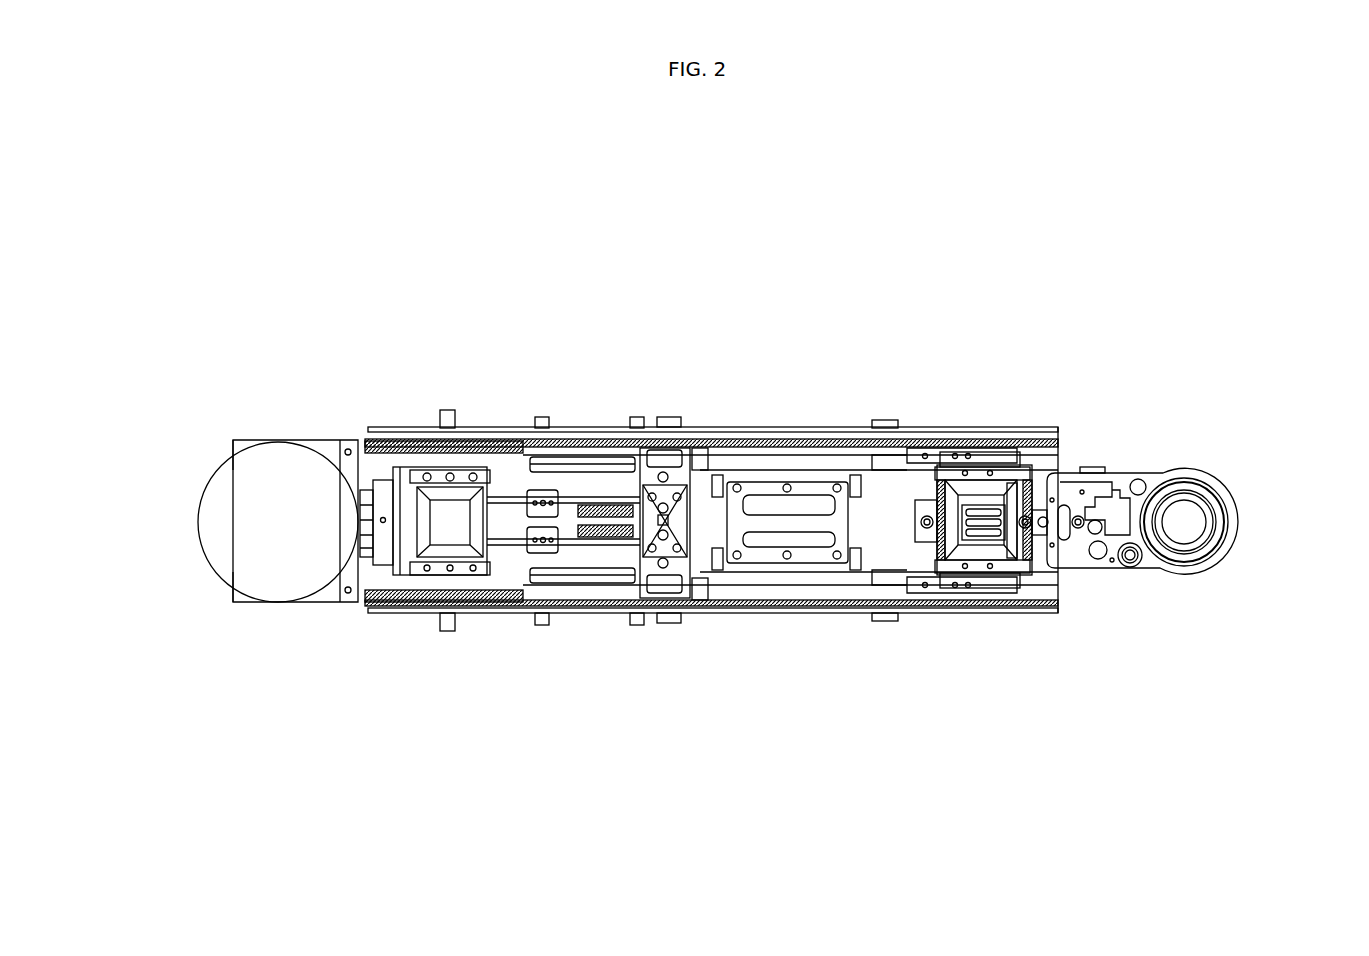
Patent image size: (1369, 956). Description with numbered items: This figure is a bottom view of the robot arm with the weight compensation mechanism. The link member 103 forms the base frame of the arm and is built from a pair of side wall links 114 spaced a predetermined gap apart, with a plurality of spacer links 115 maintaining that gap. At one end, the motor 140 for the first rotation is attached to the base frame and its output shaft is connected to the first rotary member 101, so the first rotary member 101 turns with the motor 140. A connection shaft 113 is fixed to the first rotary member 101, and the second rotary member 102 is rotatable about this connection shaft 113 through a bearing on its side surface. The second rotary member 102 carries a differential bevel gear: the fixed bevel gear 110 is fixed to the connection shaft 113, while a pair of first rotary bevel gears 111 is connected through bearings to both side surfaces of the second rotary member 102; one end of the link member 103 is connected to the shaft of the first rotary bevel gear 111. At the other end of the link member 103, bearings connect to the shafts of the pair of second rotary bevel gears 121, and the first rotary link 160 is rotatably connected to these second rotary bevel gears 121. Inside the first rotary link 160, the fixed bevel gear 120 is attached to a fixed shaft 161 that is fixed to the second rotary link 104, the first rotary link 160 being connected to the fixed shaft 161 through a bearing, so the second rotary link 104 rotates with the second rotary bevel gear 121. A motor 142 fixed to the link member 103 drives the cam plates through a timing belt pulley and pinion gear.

The first rotary member 101 is at (330, 445).
The second rotary member 102 is at (385, 470).
The link member 103 is at (750, 472).
The second rotary link 104 is at (1190, 468).
The fixed bevel gear 110 is at (407, 475).
The first rotary bevel gears 111 is at (453, 478).
The connection shaft 113 is at (387, 490).
The side wall links 114 is at (922, 448).
The spacer links 115 is at (803, 487).
The fixed bevel gear 120 is at (943, 560).
The second rotary bevel gears 121 is at (983, 497).
The motor 140 is at (208, 470).
The motor 142 is at (572, 462).
The first rotary link 160 is at (1033, 468).
The fixed shaft 161 is at (1007, 533).